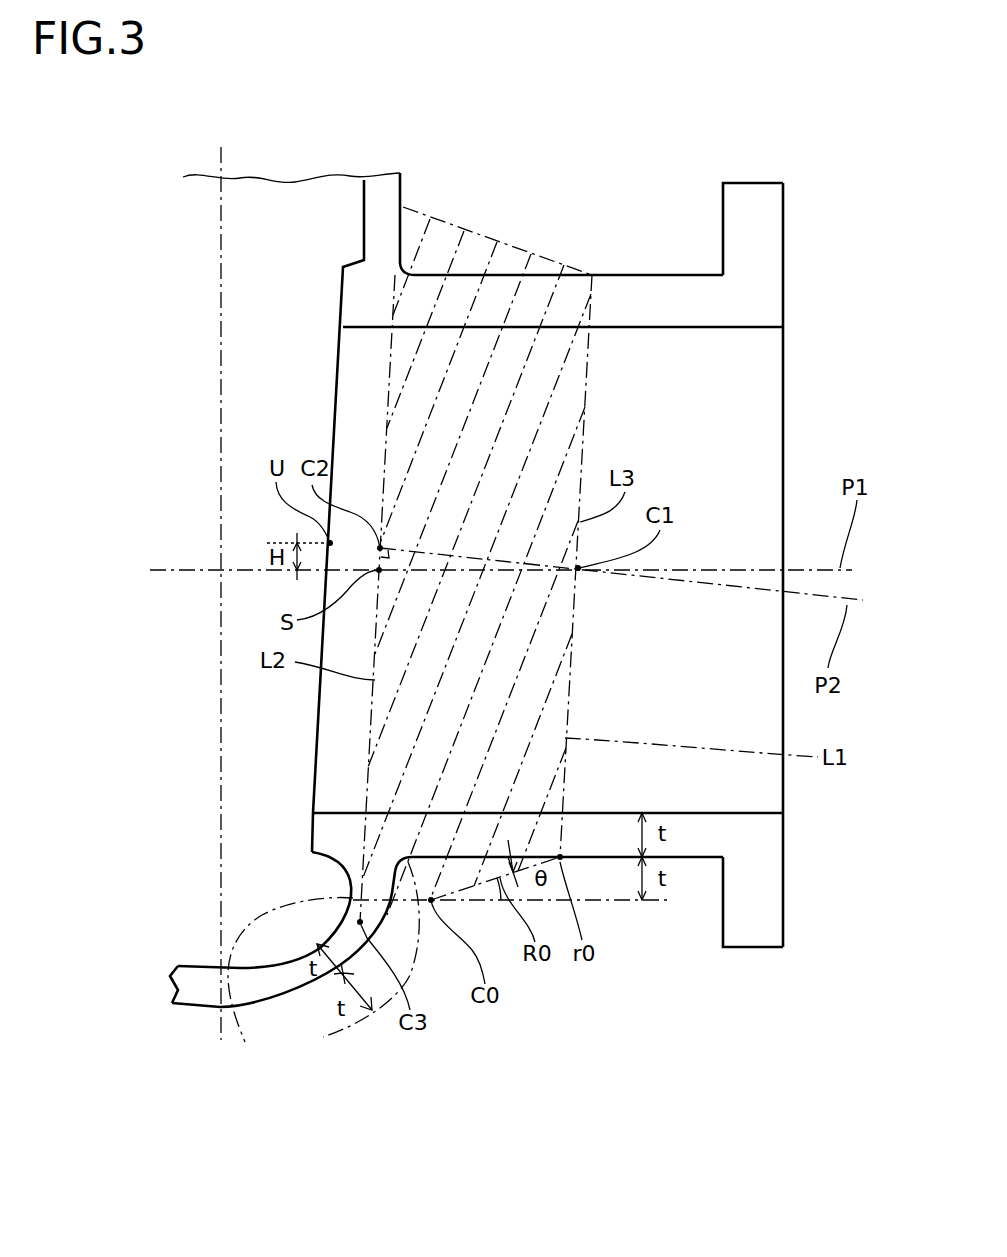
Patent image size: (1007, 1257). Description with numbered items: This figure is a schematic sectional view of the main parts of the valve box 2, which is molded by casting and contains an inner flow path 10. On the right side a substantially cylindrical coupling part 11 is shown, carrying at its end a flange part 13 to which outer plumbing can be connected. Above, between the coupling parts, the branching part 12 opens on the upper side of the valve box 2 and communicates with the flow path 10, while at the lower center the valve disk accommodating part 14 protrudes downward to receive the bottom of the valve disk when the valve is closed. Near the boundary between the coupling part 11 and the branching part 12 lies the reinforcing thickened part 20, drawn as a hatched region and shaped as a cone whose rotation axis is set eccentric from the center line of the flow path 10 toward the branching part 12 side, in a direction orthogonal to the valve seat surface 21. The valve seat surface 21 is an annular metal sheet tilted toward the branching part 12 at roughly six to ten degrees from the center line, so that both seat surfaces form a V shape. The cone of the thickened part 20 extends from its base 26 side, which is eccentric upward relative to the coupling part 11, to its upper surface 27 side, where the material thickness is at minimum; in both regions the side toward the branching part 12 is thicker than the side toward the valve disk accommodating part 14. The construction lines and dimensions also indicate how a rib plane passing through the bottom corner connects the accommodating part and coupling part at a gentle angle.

The valve box 2 is at (283, 1014).
The flow path 10 is at (735, 327).
The coupling part 11 is at (617, 290).
The branching part 12 is at (380, 193).
The flange part 13 is at (753, 918).
The valve disk accommodating part 14 is at (240, 1008).
The thickened part 20 is at (470, 255).
The valve seat surface 21 is at (313, 845).
The base 26 is at (390, 385).
The upper surface 27 is at (585, 405).